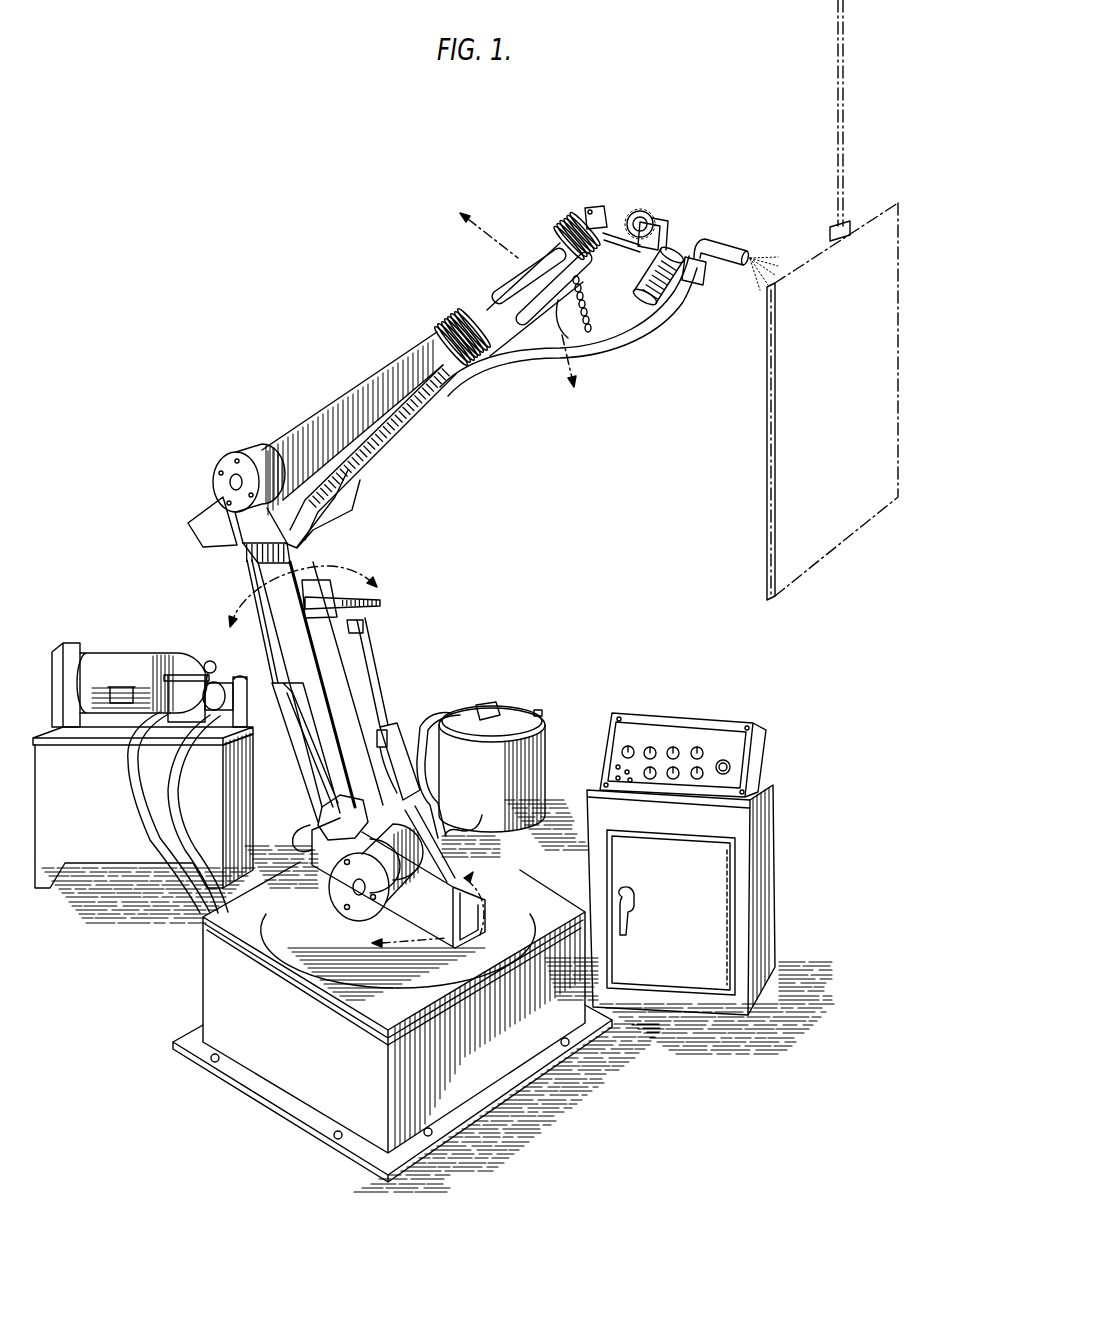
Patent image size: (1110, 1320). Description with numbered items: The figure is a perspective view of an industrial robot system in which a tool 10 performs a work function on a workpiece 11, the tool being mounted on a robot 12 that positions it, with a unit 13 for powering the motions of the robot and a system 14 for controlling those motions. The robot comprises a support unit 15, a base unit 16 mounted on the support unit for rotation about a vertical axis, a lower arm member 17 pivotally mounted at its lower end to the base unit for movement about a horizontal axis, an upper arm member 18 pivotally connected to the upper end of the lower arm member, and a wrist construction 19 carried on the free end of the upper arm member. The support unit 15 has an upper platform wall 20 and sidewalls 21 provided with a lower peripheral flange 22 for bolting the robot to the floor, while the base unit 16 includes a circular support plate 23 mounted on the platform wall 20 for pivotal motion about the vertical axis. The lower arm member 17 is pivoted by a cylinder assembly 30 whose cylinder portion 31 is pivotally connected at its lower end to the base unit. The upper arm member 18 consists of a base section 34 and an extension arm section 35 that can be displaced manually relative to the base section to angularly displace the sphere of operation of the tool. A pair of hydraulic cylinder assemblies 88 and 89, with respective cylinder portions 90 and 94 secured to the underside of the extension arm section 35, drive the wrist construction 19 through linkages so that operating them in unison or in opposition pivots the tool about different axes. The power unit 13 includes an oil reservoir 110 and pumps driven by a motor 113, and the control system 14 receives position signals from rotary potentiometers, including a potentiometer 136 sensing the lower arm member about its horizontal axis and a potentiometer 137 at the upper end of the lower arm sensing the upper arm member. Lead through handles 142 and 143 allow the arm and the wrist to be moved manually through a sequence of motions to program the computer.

The tool 10 is at (741, 247).
The workpiece 11 is at (765, 456).
The robot 12 is at (337, 388).
The unit for powering the motions of the robot 13 is at (149, 659).
The system for controlling the motions of the robot 14 is at (776, 874).
The support unit 15 is at (377, 1022).
The base unit 16 is at (497, 940).
The lower arm member 17 is at (330, 655).
The upper arm member 18 is at (421, 398).
The wrist construction 19 is at (641, 211).
The upper platform wall 20 is at (376, 1004).
The sidewalls 21 is at (286, 1072).
The lower peripheral flange 22 is at (230, 1065).
The circular support plate 23 is at (311, 947).
The cylinder assembly 30 is at (376, 669).
The cylinder portion 31 is at (410, 778).
The base section 34 is at (385, 360).
The extension arm section 35 is at (485, 300).
The hydraulic cylinder assembly 88 is at (512, 322).
The hydraulic cylinder assembly 89 is at (589, 277).
The cylinder portion 90 is at (521, 330).
The cylinder portion 94 is at (543, 308).
The oil reservoir 110 is at (107, 819).
The motor 113 is at (102, 667).
The potentiometer 136 is at (358, 887).
The potentiometer 137 is at (233, 481).
The lead through handle 142 is at (590, 311).
The lead through handle 143 is at (653, 297).